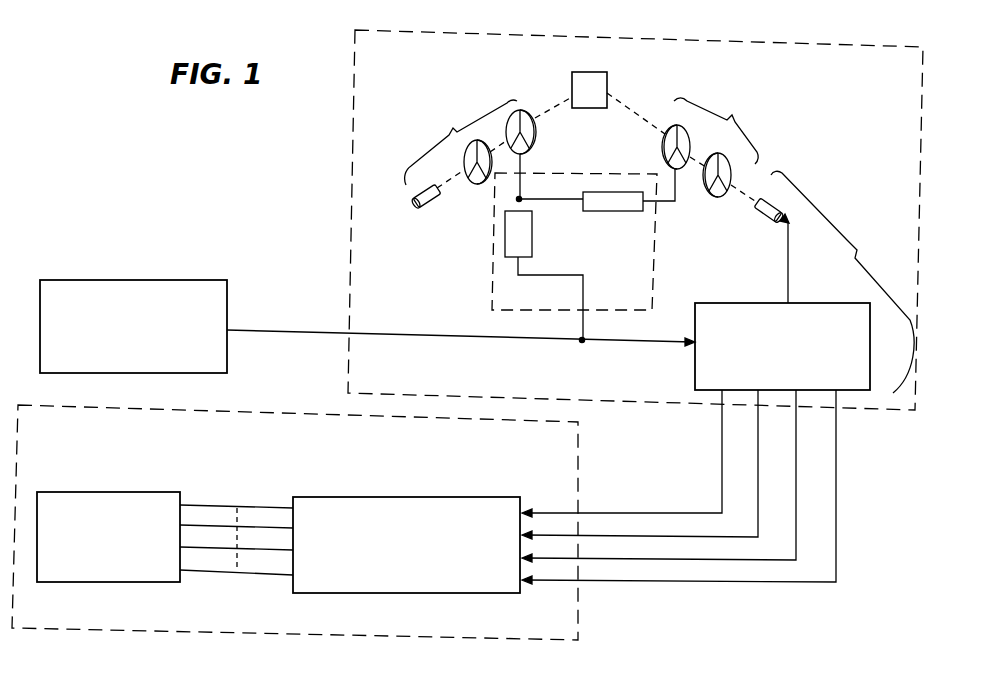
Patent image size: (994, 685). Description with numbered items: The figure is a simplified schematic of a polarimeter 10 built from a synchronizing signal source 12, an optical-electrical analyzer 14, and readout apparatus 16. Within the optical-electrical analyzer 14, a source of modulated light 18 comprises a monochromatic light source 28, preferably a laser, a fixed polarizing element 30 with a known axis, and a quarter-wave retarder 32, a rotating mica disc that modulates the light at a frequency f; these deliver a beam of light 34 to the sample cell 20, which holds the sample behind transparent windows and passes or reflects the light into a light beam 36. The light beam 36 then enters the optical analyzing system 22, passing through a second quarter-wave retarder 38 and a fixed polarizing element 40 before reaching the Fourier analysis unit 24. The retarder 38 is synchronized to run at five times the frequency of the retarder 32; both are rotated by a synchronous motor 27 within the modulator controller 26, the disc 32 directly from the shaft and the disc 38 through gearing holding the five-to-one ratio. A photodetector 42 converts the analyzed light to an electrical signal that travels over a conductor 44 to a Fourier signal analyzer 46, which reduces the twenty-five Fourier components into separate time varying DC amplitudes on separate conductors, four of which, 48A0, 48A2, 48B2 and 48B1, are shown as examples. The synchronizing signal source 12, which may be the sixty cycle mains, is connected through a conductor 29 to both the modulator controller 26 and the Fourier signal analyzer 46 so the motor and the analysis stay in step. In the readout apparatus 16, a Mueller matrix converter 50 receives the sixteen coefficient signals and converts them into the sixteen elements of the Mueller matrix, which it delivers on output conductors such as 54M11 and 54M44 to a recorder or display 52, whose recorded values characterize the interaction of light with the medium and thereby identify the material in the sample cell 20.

The polarimeter 10 is at (292, 228).
The synchronizing signal source 12 is at (149, 280).
The optical-electrical analyzer 14 is at (680, 53).
The readout apparatus 16 is at (560, 630).
The source of modulated light 18 is at (461, 142).
The sample cell 20 is at (585, 72).
The optical analyzing system 22 is at (716, 131).
The Fourier analysis unit 24 is at (842, 282).
The modulator controller 26 is at (510, 289).
The synchronous motor 27 is at (532, 237).
The monochromatic light source 28 is at (429, 210).
The conductor 29 is at (520, 343).
The fixed polarizing element 30 is at (492, 184).
The quarter-wave retarder 32 is at (534, 140).
The beam of light 34 is at (563, 98).
The light beam 36 is at (622, 105).
The quarter-wave retarder 38 is at (664, 152).
The fixed polarizing element 40 is at (732, 177).
The photodetector 42 is at (775, 211).
The conductor 44 is at (788, 280).
The Fourier signal analyzer 46 is at (870, 353).
The conductor 48A0 is at (641, 514).
The conductor 48A2 is at (645, 537).
The conductor 48B2 is at (664, 565).
The conductor 48B1 is at (735, 588).
The Mueller matrix converter 50 is at (423, 593).
The recorder or display 52 is at (121, 582).
The output conductor 54M11 is at (208, 504).
The output conductor 54M44 is at (207, 575).